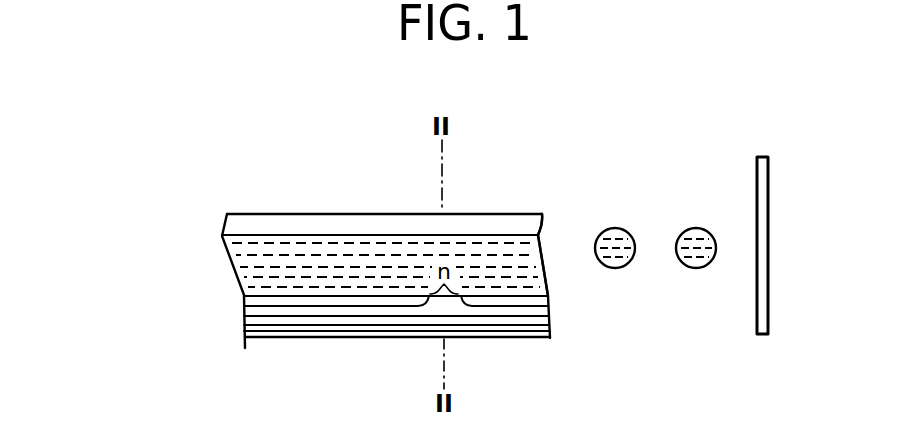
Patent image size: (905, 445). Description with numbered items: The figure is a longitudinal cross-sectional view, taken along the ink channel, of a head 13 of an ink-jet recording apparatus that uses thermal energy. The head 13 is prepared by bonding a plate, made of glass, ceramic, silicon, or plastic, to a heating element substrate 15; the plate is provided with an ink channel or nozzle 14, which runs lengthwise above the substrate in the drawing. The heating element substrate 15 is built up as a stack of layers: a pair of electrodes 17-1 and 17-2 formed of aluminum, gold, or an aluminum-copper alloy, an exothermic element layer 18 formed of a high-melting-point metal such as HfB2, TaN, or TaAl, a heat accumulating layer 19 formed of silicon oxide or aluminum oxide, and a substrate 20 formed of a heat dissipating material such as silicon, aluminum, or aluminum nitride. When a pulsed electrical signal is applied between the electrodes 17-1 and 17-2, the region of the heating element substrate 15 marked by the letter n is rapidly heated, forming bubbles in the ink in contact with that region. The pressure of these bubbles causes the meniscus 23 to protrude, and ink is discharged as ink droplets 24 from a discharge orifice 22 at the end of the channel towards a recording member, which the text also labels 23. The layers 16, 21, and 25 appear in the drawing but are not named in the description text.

The head 13 is at (278, 214).
The ink channel or nozzle 14 is at (342, 235).
The heating element substrate 15 is at (380, 354).
The first layer 16 is at (285, 297).
The electrode 17-1 is at (313, 308).
The electrode 17-2 is at (527, 305).
The exothermic element layer 18 is at (364, 318).
The heat accumulating layer 19 is at (407, 322).
The substrate 20 is at (494, 338).
The medium region 21 is at (252, 268).
The discharge orifice 22 is at (549, 278).
The meniscus 23 is at (541, 262).
The ink droplets 24 is at (573, 237).
The plate 25 is at (755, 192).